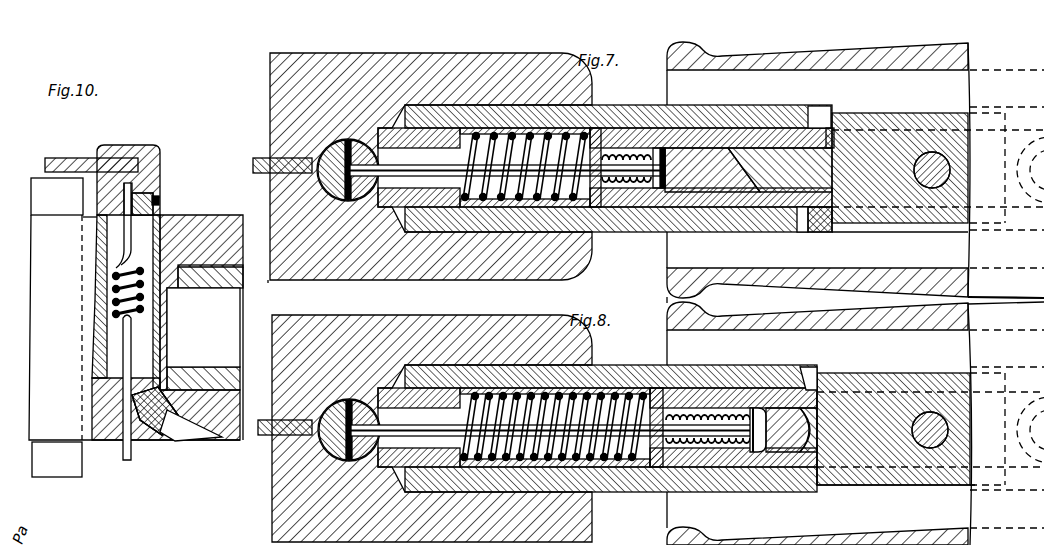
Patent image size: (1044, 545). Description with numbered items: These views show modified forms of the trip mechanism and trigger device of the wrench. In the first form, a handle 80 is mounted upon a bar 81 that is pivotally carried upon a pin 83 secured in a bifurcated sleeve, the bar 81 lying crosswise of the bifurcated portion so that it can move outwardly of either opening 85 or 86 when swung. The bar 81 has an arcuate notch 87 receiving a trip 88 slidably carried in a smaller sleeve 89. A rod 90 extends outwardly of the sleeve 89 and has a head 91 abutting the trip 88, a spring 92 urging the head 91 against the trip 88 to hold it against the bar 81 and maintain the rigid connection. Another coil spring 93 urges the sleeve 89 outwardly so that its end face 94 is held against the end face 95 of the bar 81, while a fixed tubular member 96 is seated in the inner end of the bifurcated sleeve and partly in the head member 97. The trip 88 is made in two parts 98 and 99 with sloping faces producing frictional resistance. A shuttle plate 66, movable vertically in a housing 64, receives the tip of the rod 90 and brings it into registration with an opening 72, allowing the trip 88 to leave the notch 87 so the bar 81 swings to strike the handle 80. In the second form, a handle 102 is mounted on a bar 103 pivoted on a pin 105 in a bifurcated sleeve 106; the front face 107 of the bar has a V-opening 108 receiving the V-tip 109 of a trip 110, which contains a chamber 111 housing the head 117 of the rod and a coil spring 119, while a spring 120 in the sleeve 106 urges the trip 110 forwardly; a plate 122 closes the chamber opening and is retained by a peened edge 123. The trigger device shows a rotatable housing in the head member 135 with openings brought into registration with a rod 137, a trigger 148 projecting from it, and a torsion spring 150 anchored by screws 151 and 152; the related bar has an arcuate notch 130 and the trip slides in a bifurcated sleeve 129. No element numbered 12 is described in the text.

In FIG. 7, the rod stub 12 is at (262, 159).
In FIG. 7, the housing 64 is at (330, 150).
In FIG. 8, the housing 64 is at (335, 410).
In FIG. 7, the shuttle plate 66 is at (338, 197).
In FIG. 8, the shuttle plate 66 is at (352, 402).
In FIG. 7, the opening 72 is at (335, 168).
In FIG. 8, the opening 72 is at (335, 440).
In FIG. 7, the handle 80 is at (838, 50).
In FIG. 7, the bar 81 is at (895, 119).
In FIG. 7, the pin 83 is at (936, 160).
In FIG. 7, the opening 85 is at (818, 116).
In FIG. 7, the opening 86 is at (805, 232).
In FIG. 7, the arcuate notch 87 is at (870, 224).
In FIG. 7, the trip 88 is at (742, 192).
In FIG. 7, the sleeve 89 is at (690, 136).
In FIG. 7, the rod 90 is at (491, 232).
In FIG. 7, the head 91 is at (631, 188).
In FIG. 7, the spring 92 is at (596, 207).
In FIG. 7, the coil spring 93 is at (552, 207).
In FIG. 7, the end face 94 is at (828, 220).
In FIG. 7, the end face 95 is at (830, 136).
In FIG. 7, the fixed tubular member 96 is at (386, 207).
In FIG. 7, the head member 97 is at (497, 58).
In FIG. 7, the trip part 98 is at (782, 207).
In FIG. 7, the trip part 99 is at (700, 192).
In FIG. 8, the handle 102 is at (850, 330).
In FIG. 8, the bar 103 is at (921, 383).
In FIG. 8, the pin 105 is at (935, 412).
In FIG. 10, the pin 105 is at (160, 179).
In FIG. 8, the bifurcated sleeve 106 is at (750, 378).
In FIG. 8, the front face 107 is at (818, 372).
In FIG. 8, the V-opening 108 is at (860, 470).
In FIG. 8, the V-tip 109 is at (822, 460).
In FIG. 8, the trip 110 is at (780, 462).
In FIG. 8, the chamber 111 is at (706, 410).
In FIG. 8, the head 117 is at (749, 467).
In FIG. 8, the coil spring 119 is at (705, 448).
In FIG. 8, the spring 120 is at (612, 467).
In FIG. 8, the plate 122 is at (655, 400).
In FIG. 8, the peened edge 123 is at (652, 467).
In FIG. 7, the bifurcated sleeve 129 is at (268, 281).
In FIG. 10, the bifurcated sleeve 129 is at (112, 245).
In FIG. 10, the arcuate notch 130 is at (212, 324).
In FIG. 10, the head member 135 is at (243, 222).
In FIG. 10, the rod 137 is at (166, 340).
In FIG. 10, the trigger 148 is at (70, 158).
In FIG. 10, the torsion spring 150 is at (116, 290).
In FIG. 10, the screw 151 is at (160, 201).
In FIG. 10, the screw 152 is at (178, 440).